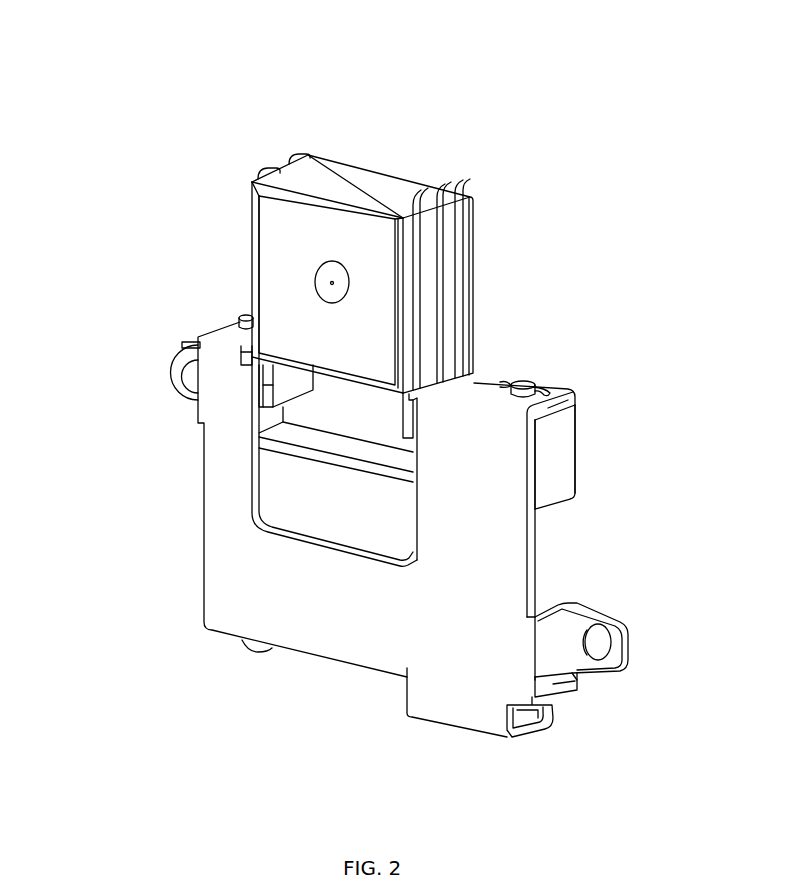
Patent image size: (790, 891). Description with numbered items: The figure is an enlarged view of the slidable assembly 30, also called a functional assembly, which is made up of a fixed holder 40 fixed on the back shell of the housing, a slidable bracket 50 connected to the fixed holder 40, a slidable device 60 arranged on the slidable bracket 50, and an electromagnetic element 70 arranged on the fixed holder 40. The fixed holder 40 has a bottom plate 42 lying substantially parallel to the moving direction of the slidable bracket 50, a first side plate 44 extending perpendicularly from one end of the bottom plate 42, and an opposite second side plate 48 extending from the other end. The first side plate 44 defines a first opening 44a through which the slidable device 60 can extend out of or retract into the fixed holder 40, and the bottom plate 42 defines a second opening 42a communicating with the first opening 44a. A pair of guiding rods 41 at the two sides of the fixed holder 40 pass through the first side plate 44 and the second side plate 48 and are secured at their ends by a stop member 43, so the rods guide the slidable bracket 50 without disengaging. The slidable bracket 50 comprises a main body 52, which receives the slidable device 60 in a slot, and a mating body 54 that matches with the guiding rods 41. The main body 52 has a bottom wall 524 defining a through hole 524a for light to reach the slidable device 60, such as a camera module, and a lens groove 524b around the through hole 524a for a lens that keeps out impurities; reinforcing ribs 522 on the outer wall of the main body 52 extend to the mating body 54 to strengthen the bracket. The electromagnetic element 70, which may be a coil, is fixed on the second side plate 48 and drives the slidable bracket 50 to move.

The slidable assembly 30 is at (78, 48).
The fixed holder 40 is at (192, 483).
The guiding rods 41 is at (526, 380).
The bottom plate 42 is at (510, 537).
The second opening 42a is at (337, 525).
The stop member 43 is at (547, 384).
The first side plate 44 is at (577, 395).
The first opening 44a is at (418, 400).
The second side plate 48 is at (557, 683).
The slidable bracket 50 is at (99, 292).
The main body 52 is at (325, 177).
The reinforcing ribs 522 is at (468, 233).
The bottom wall 524 is at (272, 247).
The through hole 524a is at (445, 197).
The lens groove 524b is at (260, 214).
The mating body 54 is at (270, 390).
The slidable device 60 is at (332, 282).
The electromagnetic element 70 is at (467, 700).